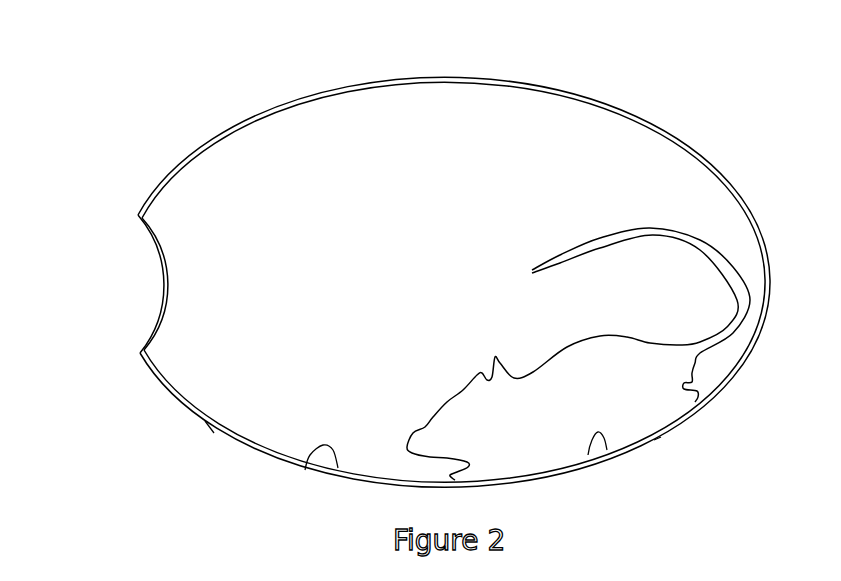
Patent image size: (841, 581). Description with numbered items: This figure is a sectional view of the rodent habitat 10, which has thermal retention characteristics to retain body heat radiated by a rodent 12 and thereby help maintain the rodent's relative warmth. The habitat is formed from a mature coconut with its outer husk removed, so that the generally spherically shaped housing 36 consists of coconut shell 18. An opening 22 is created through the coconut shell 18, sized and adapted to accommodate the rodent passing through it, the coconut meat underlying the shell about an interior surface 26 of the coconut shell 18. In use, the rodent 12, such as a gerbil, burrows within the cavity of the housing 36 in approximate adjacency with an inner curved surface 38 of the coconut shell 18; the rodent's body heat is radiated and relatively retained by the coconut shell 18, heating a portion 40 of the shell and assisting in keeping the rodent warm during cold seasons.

The rodent habitat 10 is at (437, 56).
The rodent 12 is at (620, 368).
The coconut shell 18 is at (248, 117).
The opening 22 is at (130, 280).
The interior surface 26 is at (305, 470).
The housing 36 is at (210, 428).
The inner curved surface 38 is at (588, 455).
The portion 40 is at (668, 445).